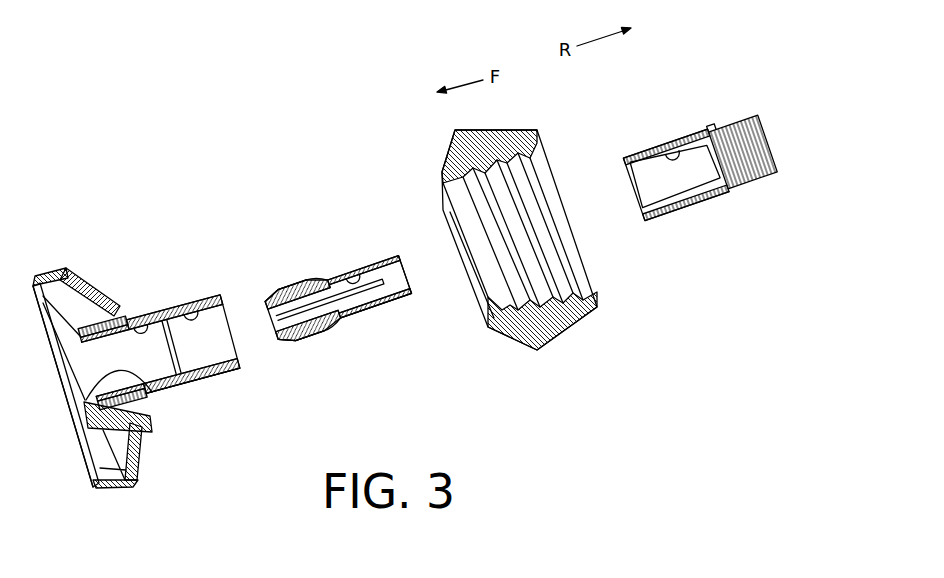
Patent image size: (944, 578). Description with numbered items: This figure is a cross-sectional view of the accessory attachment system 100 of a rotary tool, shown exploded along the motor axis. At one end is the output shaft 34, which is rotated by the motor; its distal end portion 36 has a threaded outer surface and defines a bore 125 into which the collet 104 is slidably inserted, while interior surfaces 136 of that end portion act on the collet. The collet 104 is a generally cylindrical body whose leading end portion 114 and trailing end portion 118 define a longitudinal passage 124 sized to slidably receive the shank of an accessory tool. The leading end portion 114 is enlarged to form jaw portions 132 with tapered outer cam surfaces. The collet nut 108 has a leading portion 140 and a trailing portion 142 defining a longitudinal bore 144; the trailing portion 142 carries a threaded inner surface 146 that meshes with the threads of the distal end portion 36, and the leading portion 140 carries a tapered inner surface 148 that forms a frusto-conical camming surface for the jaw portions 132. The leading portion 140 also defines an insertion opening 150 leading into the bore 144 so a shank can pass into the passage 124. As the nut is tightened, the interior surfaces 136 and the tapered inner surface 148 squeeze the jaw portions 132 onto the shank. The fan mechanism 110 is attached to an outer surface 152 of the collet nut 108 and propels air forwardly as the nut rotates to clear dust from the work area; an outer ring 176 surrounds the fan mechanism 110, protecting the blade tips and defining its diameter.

The accessory attachment system 100 is at (168, 133).
The collet nut 108 is at (138, 236).
The fan mechanism 110 is at (40, 262).
The leading portion 140 is at (80, 330).
The longitudinal bore 144 is at (147, 320).
The threaded inner surface 146 is at (197, 305).
The trailing portion 142 is at (214, 383).
The outer surface 152 is at (181, 398).
The tapered inner surface 148 is at (158, 390).
The insertion opening 150 is at (60, 393).
The outer ring 176 is at (118, 483).
The collet 104 is at (308, 232).
The jaw portions 132 is at (277, 296).
The passage 124 is at (352, 282).
The leading end portion 114 is at (276, 358).
The trailing end portion 118 is at (408, 311).
The distal end portion 36 is at (708, 125).
The output shaft 34 is at (766, 178).
The bore 125 is at (677, 158).
The interior surfaces 136 is at (642, 205).